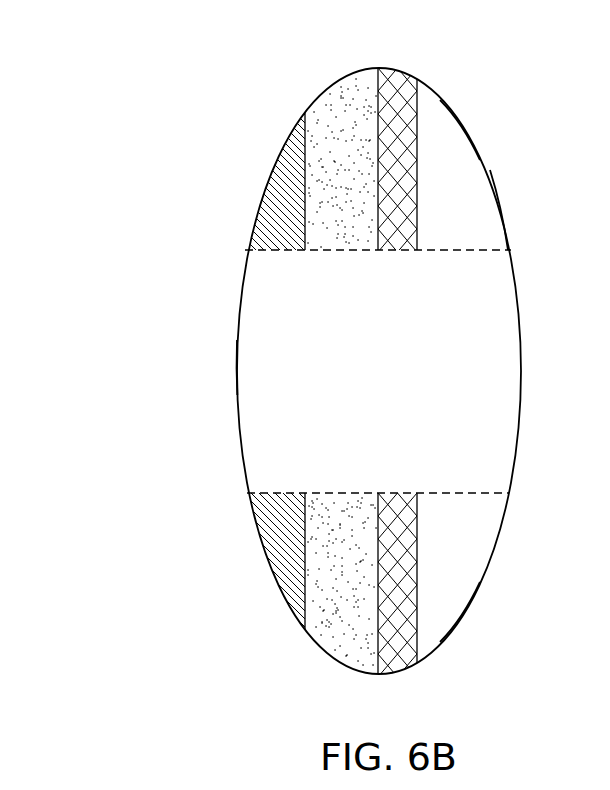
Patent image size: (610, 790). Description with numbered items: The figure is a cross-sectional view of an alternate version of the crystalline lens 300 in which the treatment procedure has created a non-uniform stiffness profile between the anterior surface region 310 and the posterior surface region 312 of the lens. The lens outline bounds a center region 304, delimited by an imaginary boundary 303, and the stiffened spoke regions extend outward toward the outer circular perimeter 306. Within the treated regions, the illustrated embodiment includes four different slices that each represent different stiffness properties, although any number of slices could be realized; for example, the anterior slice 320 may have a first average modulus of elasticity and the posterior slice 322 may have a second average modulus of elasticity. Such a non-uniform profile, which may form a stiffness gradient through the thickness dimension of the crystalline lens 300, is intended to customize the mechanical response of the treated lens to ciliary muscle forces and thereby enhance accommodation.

The crystalline lens 300 is at (282, 92).
The imaginary boundary 303 is at (361, 250).
The center region 304 is at (520, 372).
The outer circular perimeter 306 is at (378, 68).
The anterior surface region 310 is at (237, 367).
The posterior surface region 312 is at (502, 215).
The anterior slice 320 is at (290, 160).
The posterior slice 322 is at (447, 110).